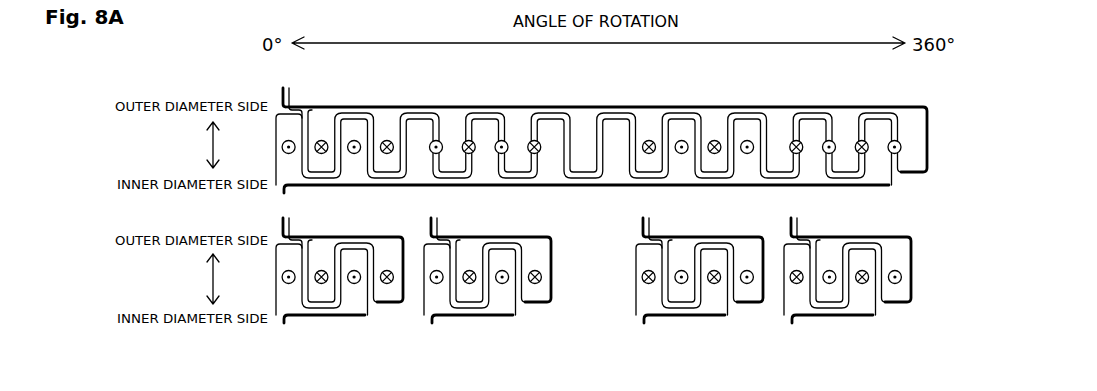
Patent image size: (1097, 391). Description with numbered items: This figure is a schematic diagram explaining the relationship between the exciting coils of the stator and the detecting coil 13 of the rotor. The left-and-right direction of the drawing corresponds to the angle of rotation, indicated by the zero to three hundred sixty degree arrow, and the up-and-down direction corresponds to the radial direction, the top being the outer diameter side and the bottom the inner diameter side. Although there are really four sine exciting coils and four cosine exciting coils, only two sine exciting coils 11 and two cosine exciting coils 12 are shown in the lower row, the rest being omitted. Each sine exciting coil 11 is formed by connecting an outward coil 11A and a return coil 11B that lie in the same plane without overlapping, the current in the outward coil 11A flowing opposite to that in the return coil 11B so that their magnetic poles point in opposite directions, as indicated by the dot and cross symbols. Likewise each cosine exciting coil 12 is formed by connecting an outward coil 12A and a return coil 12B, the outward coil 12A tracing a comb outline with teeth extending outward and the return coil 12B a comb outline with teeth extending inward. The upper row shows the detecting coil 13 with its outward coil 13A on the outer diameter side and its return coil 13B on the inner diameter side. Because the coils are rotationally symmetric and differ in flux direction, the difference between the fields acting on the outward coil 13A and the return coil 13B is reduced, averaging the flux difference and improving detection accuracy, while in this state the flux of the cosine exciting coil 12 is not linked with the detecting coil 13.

The sine exciting coil 11 is at (516, 282).
The outward coil 11A is at (347, 320).
The return coil 11B is at (359, 237).
The cosine exciting coil 12 is at (664, 282).
The outward coil 12A is at (497, 320).
The return coil 12B is at (512, 237).
The detecting coil 13 is at (601, 143).
The outward coil 13A is at (601, 105).
The return coil 13B is at (596, 188).